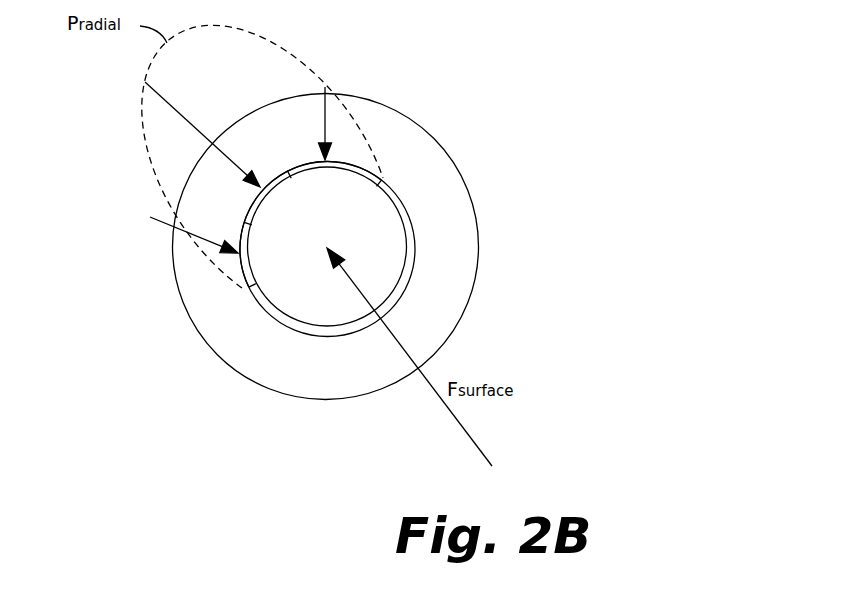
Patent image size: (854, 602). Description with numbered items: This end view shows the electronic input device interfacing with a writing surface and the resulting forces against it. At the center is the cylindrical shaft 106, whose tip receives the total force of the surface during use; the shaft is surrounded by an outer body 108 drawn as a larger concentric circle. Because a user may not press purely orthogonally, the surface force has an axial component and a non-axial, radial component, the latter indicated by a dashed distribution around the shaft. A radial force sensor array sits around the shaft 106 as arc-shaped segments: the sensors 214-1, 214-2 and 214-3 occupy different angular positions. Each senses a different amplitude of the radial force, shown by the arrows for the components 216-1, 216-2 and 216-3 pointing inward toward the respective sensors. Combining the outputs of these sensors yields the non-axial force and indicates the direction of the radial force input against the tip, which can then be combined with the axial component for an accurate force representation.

The cylindrical shaft 106 is at (386, 237).
The outer structure surrounding the body 108 is at (440, 167).
The sensor 214-1 is at (240, 268).
The sensor 214-2 is at (245, 210).
The sensor 214-3 is at (355, 164).
The component of the non-axial force 216-1 is at (163, 232).
The component of the non-axial force 216-2 is at (193, 130).
The component of the non-axial force 216-3 is at (327, 118).